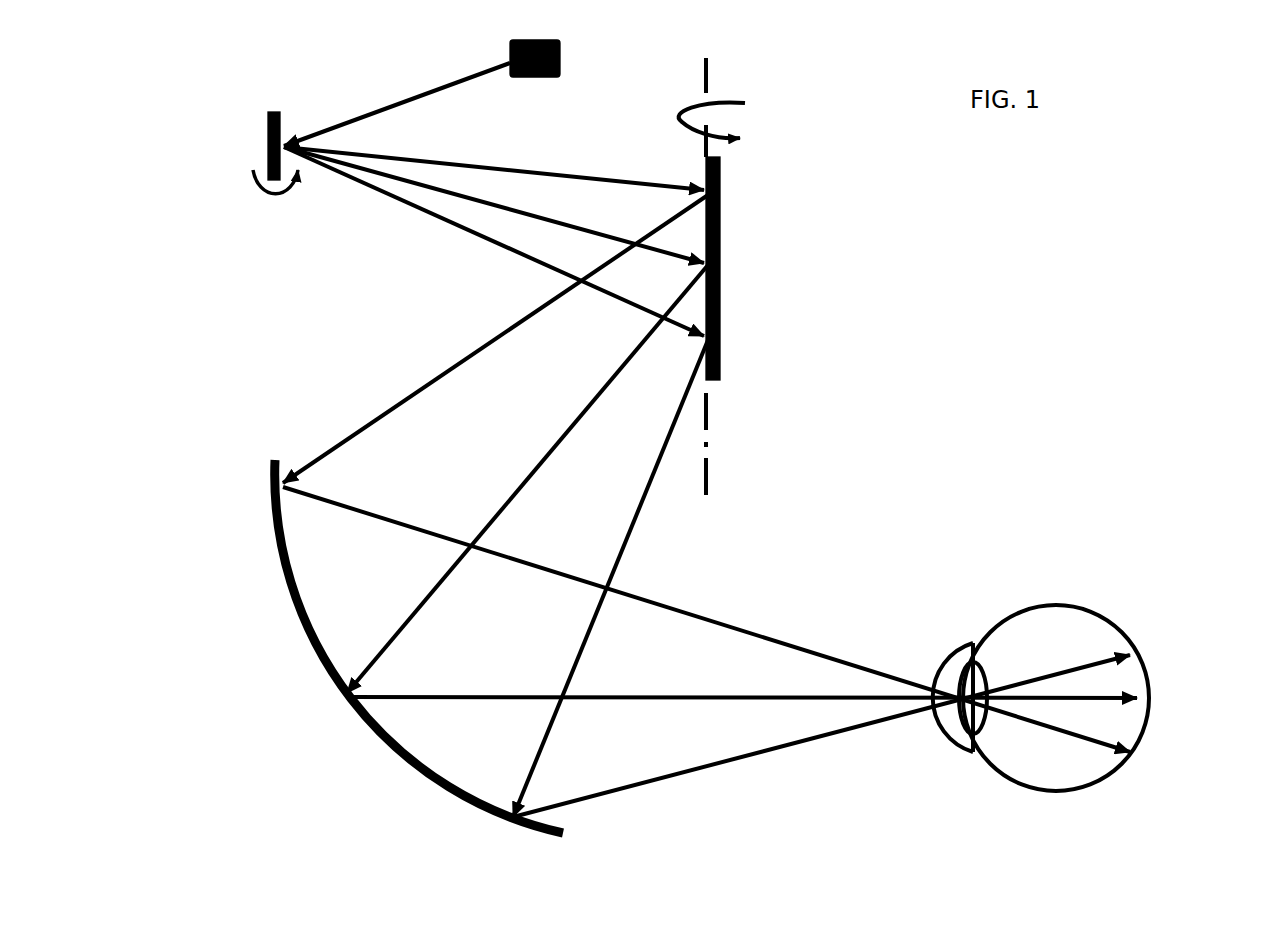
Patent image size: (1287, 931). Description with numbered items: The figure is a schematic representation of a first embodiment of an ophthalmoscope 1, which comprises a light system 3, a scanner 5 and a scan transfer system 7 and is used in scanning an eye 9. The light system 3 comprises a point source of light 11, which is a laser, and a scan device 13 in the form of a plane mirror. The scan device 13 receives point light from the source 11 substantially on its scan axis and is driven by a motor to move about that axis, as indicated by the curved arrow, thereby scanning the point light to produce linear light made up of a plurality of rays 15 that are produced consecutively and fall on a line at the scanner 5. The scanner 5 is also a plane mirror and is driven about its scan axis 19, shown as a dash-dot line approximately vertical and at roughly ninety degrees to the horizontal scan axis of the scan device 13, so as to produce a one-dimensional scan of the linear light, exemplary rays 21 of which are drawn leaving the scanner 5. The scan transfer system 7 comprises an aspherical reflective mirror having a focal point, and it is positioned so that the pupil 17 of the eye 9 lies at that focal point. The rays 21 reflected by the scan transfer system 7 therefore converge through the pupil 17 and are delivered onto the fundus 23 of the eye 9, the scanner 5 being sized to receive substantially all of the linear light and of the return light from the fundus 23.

The ophthalmoscope 1 is at (906, 393).
The light system 3 is at (352, 68).
The scanner 5 is at (720, 237).
The scan transfer system 7 is at (290, 608).
The eye 9 is at (1132, 611).
The point source of light 11 is at (560, 50).
The scan device 13 is at (268, 120).
The rays of light 15 is at (377, 208).
The pupil 17 is at (935, 755).
The scan axis 19 is at (708, 485).
The rays of the 1D scan 21 is at (445, 361).
The fundus 23 is at (1148, 688).